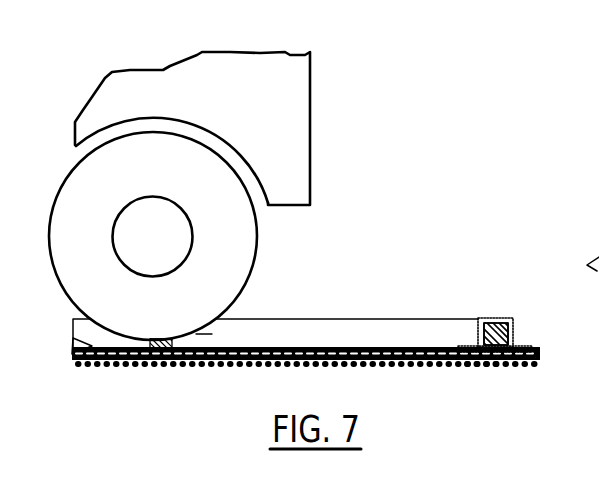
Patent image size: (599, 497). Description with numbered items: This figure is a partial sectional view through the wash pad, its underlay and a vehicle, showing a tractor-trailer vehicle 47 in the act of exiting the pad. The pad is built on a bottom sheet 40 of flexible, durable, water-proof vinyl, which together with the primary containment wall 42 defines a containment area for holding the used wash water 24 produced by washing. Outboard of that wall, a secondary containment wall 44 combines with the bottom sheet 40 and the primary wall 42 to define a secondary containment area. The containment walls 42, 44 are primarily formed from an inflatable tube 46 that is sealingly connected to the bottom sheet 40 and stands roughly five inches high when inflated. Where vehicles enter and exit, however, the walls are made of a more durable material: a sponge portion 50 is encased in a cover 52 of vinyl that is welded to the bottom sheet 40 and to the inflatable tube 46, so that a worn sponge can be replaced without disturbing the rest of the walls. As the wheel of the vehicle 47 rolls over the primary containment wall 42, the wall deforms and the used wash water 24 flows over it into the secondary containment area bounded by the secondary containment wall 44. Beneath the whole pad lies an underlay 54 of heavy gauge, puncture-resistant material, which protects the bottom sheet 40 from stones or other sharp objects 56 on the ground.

The used wash water 24 is at (73, 340).
The bottom sheet 40 is at (540, 352).
The primary containment wall 42 is at (197, 333).
The secondary containment wall 44 is at (512, 309).
The inflatable tube 46 is at (373, 318).
The vehicle 47 is at (310, 97).
The sponge portion 50 is at (496, 318).
The cover 52 is at (513, 329).
The underlay 54 is at (543, 353).
The sharp objects 56 is at (500, 368).